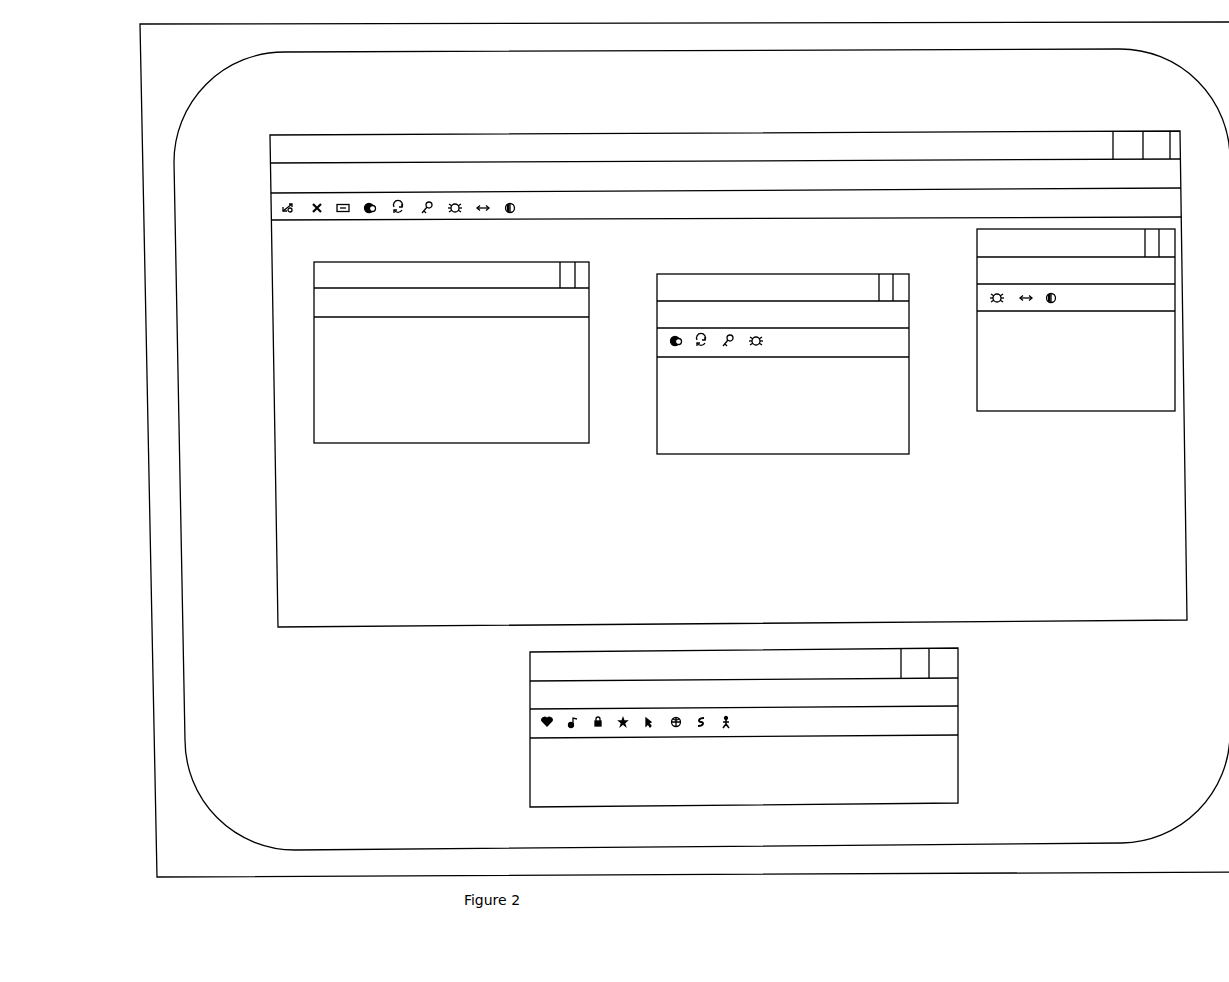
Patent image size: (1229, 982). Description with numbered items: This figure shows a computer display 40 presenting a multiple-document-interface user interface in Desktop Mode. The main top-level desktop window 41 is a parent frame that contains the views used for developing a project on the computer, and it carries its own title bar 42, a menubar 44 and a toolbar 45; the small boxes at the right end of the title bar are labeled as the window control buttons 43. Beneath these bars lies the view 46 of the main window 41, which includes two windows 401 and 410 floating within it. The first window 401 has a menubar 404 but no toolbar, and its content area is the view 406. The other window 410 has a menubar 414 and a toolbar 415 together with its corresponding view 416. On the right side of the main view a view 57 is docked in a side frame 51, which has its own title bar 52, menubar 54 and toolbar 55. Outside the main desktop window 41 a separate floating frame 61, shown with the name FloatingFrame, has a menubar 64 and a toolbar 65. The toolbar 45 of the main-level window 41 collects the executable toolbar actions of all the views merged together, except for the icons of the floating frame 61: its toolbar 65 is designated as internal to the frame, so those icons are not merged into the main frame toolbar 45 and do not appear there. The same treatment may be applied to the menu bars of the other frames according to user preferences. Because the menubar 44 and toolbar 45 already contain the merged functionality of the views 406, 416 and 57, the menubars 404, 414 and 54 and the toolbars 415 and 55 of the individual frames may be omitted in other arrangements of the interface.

The computer display 40 is at (701, 449).
The main top-level desktop window 41 is at (410, 135).
The title bar 42 is at (503, 150).
The window control buttons 43 is at (1128, 132).
The menubar 44 is at (572, 178).
The toolbar 45 is at (642, 207).
The view 46 is at (388, 578).
The window 401 is at (426, 443).
The menubar 404 is at (522, 300).
The view 406 is at (550, 413).
The window 410 is at (813, 454).
The menubar 414 is at (880, 313).
The toolbar 415 is at (880, 340).
The view 416 is at (714, 427).
The side frame 51 is at (1048, 413).
The title bar 52 is at (1117, 243).
The menubar 54 is at (1146, 270).
The toolbar 55 is at (1159, 298).
The view 57 is at (1158, 377).
The floating frame 61 is at (538, 668).
The FloatingFrame menu bar 64 is at (540, 694).
The toolbar 65 is at (543, 722).